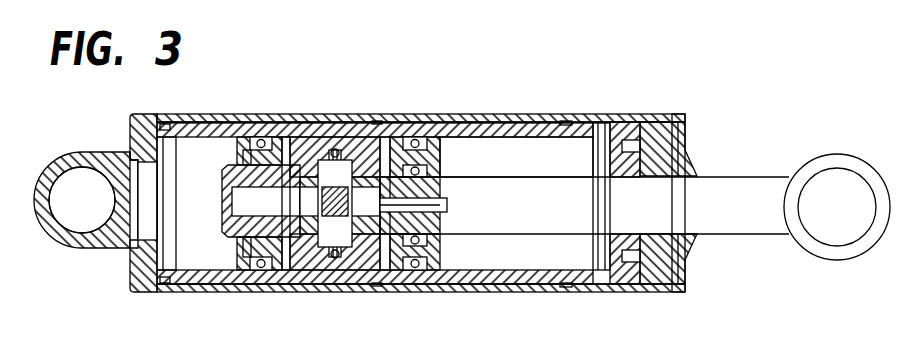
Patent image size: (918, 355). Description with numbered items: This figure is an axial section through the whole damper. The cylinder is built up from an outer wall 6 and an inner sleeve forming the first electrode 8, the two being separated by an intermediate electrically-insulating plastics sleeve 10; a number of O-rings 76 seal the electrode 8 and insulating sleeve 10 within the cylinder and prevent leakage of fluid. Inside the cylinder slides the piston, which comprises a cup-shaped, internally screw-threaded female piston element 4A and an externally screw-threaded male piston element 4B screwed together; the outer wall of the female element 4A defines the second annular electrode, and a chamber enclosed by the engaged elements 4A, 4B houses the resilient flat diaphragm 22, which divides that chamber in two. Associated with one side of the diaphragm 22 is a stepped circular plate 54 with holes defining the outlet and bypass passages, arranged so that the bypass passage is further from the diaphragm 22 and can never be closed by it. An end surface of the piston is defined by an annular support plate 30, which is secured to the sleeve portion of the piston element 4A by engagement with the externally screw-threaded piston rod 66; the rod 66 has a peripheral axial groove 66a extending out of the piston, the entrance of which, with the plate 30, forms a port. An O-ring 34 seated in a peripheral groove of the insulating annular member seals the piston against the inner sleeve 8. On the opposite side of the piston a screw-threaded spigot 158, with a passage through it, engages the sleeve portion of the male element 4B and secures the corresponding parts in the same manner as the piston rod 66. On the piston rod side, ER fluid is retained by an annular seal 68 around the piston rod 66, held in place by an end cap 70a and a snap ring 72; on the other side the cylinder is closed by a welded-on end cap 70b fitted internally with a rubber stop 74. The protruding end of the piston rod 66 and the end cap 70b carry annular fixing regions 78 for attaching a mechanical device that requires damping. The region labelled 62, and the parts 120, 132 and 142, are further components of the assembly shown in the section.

The female piston element 4A is at (362, 140).
The male piston element 4B is at (303, 140).
The outer wall 6 is at (478, 292).
The first electrode 8 is at (500, 128).
The electrically-insulating plastics sleeve 10 is at (522, 130).
The diaphragm 22 is at (329, 150).
The annular support plate 30 is at (440, 172).
The O-ring 34 is at (411, 268).
The circular plate 54 is at (355, 271).
The spacer 62 is at (388, 137).
The piston rod 66 is at (756, 215).
The peripheral axial groove 66a is at (447, 205).
The annular seal 68 is at (624, 262).
The end cap 70a is at (652, 262).
The welded-on end cap 70b is at (118, 237).
The snap ring 72 is at (685, 284).
The rubber stop 74 is at (151, 291).
The O-rings 76 is at (607, 115).
The annular fixing regions 78 is at (63, 157).
The valve disc 120 is at (340, 262).
The piston seal 132 is at (264, 250).
The O-ring 142 is at (254, 268).
The screw-threaded spigot 158 is at (222, 172).